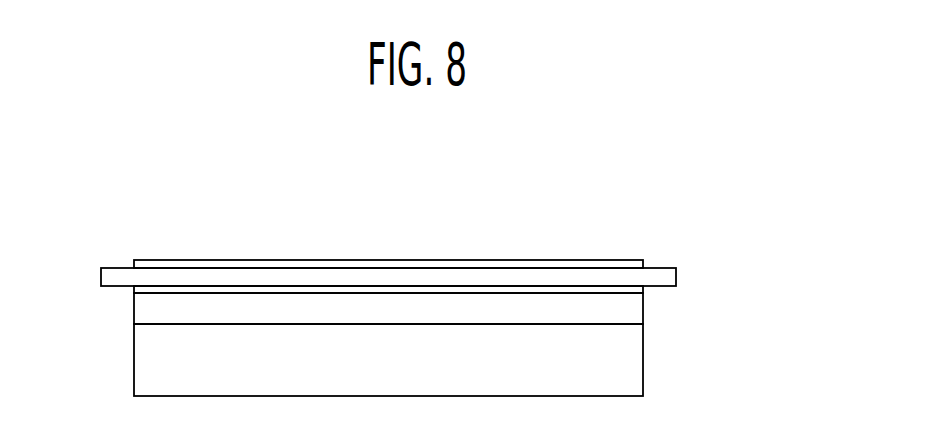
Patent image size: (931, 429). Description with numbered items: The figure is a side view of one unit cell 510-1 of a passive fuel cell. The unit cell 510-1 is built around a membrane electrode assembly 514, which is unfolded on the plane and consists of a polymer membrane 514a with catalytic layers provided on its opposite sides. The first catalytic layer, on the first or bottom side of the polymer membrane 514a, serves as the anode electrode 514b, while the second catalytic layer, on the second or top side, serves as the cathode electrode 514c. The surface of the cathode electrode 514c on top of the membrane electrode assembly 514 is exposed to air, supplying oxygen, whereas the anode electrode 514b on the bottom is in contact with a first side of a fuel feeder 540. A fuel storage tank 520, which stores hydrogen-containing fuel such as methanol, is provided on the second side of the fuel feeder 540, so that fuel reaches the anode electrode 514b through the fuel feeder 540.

The unit cell 510-1 is at (180, 222).
The membrane electrode assembly 514 is at (775, 177).
The polymer membrane 514a is at (667, 270).
The anode electrode 514b is at (630, 288).
The cathode electrode 514c is at (636, 262).
The fuel feeder 540 is at (148, 313).
The fuel storage tank 520 is at (628, 373).